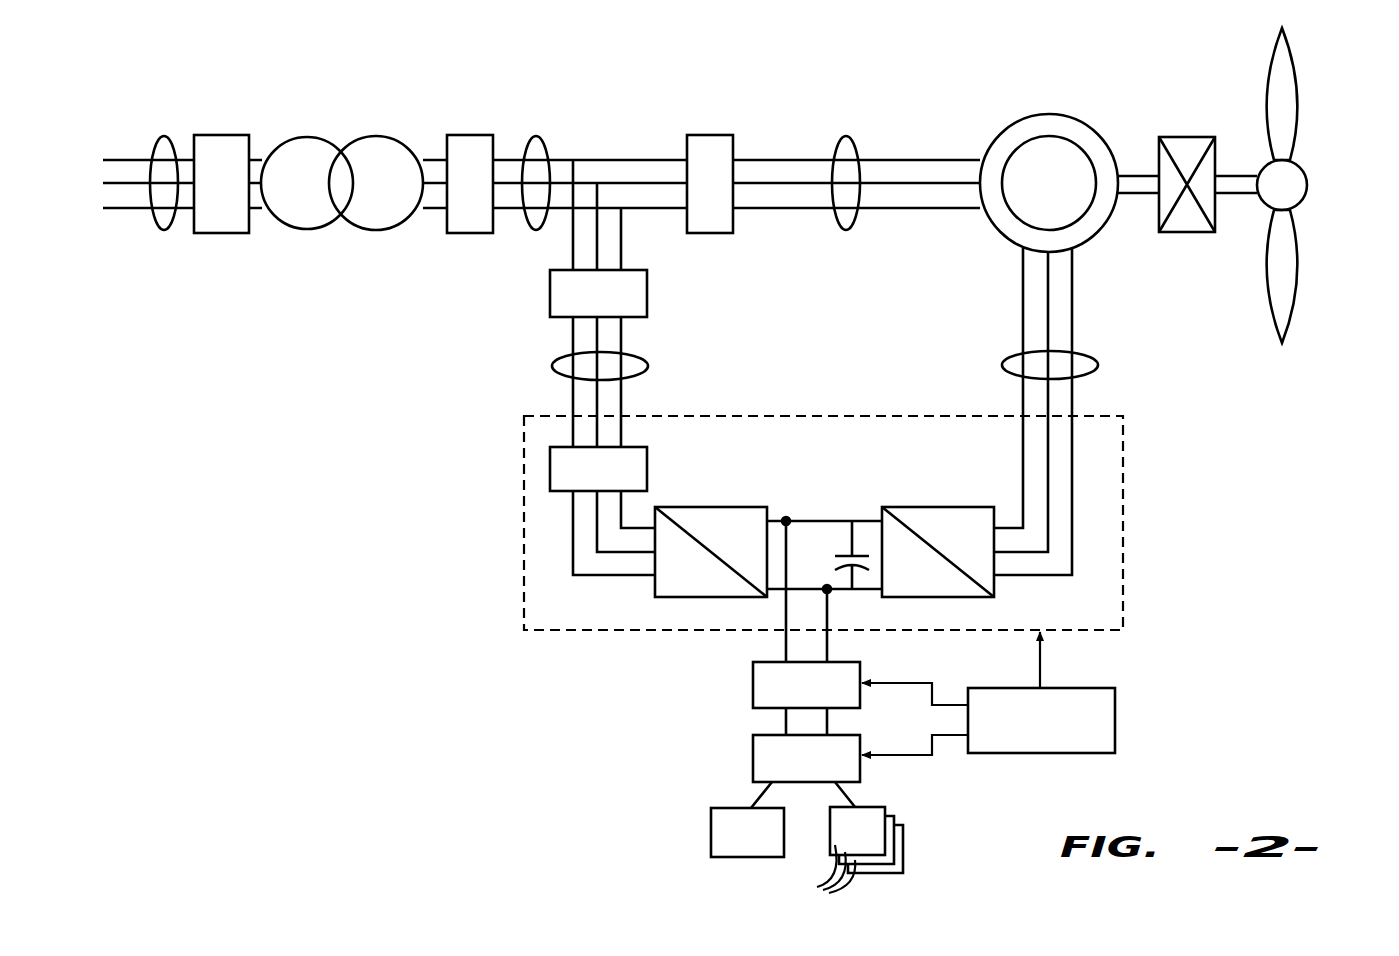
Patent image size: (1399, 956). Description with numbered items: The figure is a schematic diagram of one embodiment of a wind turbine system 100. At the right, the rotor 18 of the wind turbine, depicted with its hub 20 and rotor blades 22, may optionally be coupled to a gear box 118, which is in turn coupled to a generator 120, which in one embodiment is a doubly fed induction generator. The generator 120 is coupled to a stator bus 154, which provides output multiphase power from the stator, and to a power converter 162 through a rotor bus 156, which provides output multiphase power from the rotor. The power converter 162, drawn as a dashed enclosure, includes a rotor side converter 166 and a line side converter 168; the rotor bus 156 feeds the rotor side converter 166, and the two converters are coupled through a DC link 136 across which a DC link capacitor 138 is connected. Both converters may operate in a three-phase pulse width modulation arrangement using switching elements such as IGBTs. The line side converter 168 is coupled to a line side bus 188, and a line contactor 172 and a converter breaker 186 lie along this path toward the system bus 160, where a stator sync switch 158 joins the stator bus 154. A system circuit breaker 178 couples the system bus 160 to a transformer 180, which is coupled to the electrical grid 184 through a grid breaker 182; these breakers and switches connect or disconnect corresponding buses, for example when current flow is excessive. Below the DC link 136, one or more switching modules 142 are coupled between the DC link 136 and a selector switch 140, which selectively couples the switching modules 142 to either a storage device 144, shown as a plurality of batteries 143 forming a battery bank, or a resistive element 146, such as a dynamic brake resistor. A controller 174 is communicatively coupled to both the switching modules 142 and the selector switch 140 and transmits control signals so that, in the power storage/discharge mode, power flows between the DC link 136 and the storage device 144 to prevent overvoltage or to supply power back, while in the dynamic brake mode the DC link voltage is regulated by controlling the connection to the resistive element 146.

The rotor 18 is at (1336, 120).
The hub 20 is at (1307, 180).
The rotor blades 22 is at (1298, 87).
The wind turbine system 100 is at (382, 566).
The gear box 118 is at (1188, 137).
The generator 120 is at (1048, 114).
The DC link 136 is at (797, 520).
The DC link capacitor 138 is at (838, 555).
The selector switch 140 is at (828, 771).
The switching module 142 is at (860, 685).
The batteries 143 is at (809, 874).
The storage device 144 is at (905, 831).
The resistive element 146 is at (768, 844).
The stator bus 154 is at (848, 135).
The rotor bus 156 is at (1100, 365).
The stator sync switch 158 is at (710, 135).
The system bus 160 is at (536, 135).
The power converter 162 is at (765, 410).
The rotor side converter 166 is at (994, 585).
The line side converter 168 is at (650, 588).
The line contactor 172 is at (550, 470).
The controller 174 is at (1063, 733).
The system circuit breaker 178 is at (468, 135).
The transformer 180 is at (375, 136).
The grid breaker 182 is at (222, 135).
The electrical grid 184 is at (164, 135).
The converter breaker 186 is at (550, 296).
The line side bus 188 is at (558, 372).